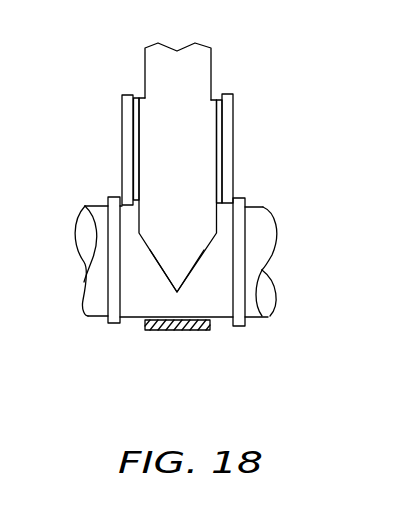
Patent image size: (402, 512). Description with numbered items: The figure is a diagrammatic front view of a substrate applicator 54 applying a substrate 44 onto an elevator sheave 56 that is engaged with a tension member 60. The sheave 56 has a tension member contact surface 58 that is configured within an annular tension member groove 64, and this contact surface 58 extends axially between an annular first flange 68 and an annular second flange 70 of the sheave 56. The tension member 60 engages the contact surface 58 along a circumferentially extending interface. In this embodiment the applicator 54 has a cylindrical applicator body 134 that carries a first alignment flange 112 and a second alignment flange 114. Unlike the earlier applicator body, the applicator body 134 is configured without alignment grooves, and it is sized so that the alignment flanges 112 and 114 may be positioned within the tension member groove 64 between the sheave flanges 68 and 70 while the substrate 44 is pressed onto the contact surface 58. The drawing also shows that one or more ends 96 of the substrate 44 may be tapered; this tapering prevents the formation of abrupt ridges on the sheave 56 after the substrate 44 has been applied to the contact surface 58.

The substrate 44 is at (203, 152).
The substrate applicator 54 is at (251, 107).
The sheave 56 is at (278, 217).
The tension member contact surface 58 is at (223, 300).
The tension member 60 is at (178, 331).
The tension member groove 64 is at (130, 327).
The first flange 68 is at (112, 324).
The second flange 70 is at (239, 327).
The ends of the substrate 96 is at (148, 264).
The first alignment flange 112 is at (128, 95).
The second alignment flange 114 is at (226, 94).
The applicator body 134 is at (122, 112).